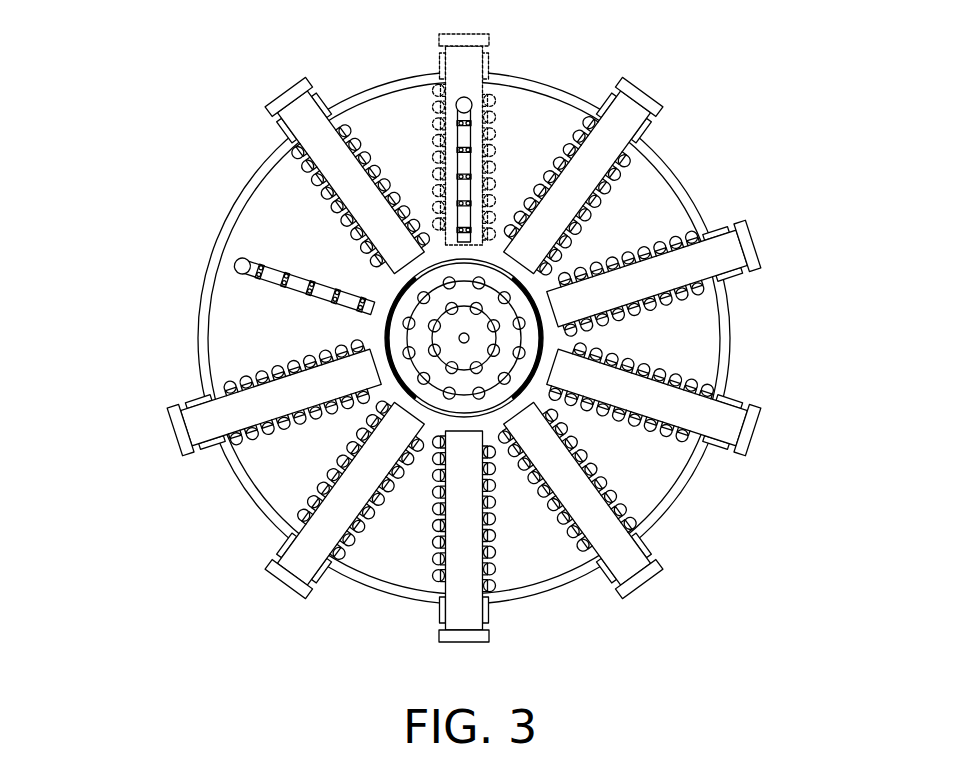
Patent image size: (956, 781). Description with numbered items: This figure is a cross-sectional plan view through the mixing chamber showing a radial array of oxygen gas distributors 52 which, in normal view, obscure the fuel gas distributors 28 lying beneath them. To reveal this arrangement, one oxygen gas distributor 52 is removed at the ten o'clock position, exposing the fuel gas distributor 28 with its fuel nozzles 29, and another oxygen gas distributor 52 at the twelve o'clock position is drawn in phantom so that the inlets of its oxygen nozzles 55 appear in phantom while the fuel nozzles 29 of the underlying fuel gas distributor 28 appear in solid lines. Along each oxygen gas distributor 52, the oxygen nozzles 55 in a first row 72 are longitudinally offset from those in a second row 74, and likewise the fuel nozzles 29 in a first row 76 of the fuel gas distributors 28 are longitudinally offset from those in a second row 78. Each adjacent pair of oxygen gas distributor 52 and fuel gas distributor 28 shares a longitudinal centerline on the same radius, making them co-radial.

The fuel gas distributor 28 is at (344, 199).
The fuel nozzle 29 is at (457, 136).
The oxygen gas distributor 52 is at (313, 118).
The oxygen nozzle 55 is at (367, 157).
The first row of oxygen gas distributors 72 is at (347, 116).
The second row of oxygen gas distributors 74 is at (280, 153).
The first row of fuel gas distributors 76 is at (262, 247).
The second row of fuel gas distributors 78 is at (308, 236).